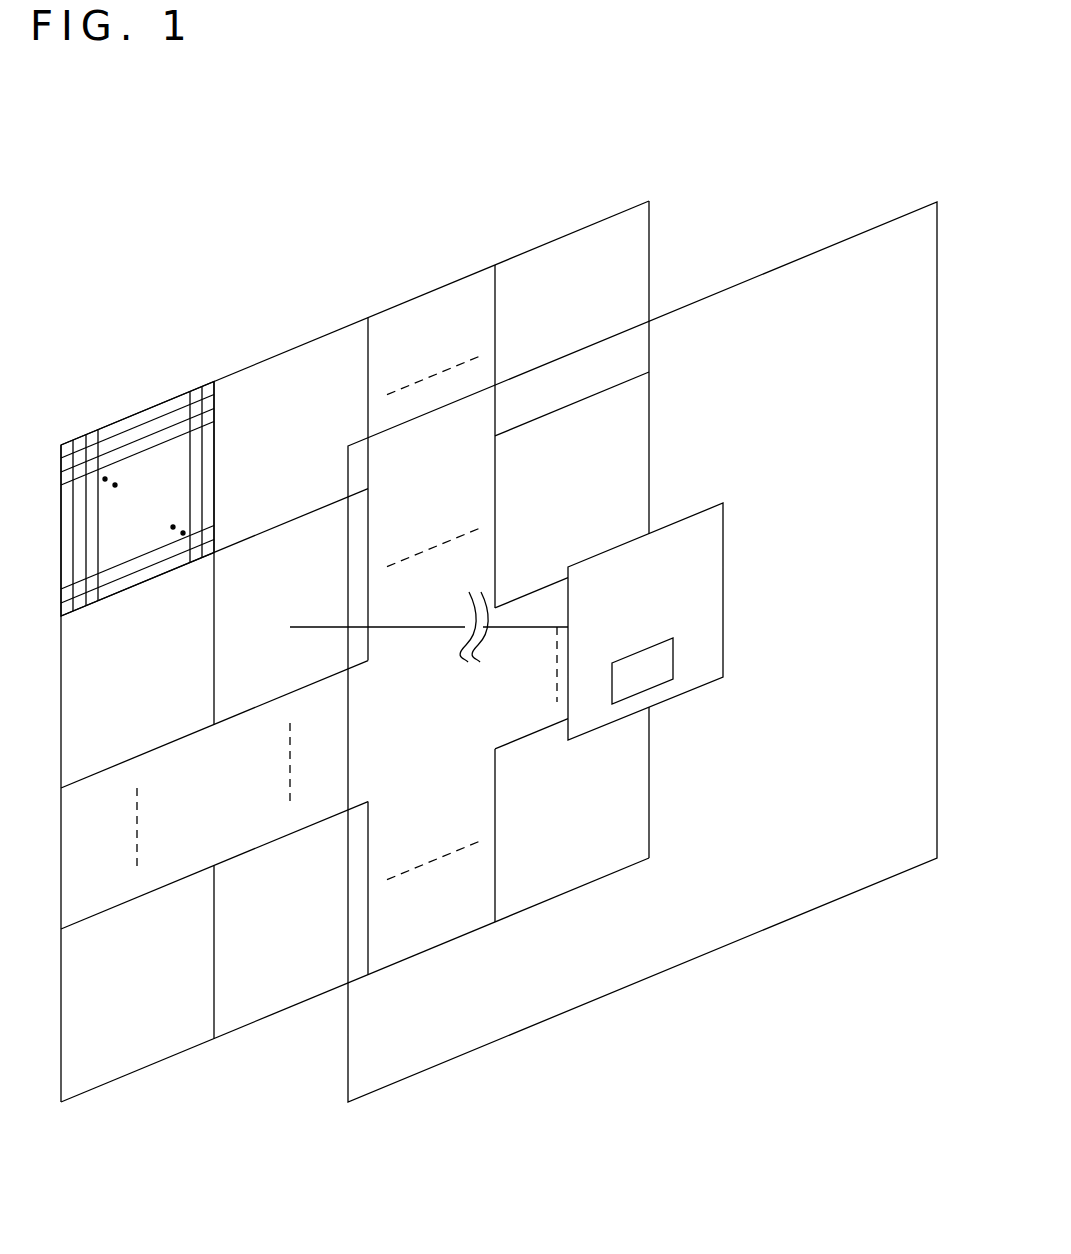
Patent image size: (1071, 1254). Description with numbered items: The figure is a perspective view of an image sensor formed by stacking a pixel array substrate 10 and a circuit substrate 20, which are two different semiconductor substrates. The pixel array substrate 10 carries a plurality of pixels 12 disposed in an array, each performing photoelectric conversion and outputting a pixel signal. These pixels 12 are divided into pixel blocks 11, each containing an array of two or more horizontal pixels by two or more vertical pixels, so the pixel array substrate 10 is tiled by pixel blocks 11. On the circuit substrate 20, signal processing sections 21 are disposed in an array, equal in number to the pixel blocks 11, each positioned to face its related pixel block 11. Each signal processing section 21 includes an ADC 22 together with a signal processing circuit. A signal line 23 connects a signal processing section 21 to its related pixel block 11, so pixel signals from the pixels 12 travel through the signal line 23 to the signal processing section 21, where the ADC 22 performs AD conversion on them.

The pixel array substrate 10 is at (610, 214).
The pixel block 11 is at (140, 468).
The pixel 12 is at (67, 452).
The circuit substrate 20 is at (886, 222).
The signal processing section 21 is at (682, 516).
The ADC 22 is at (673, 660).
The signal line 23 is at (420, 627).